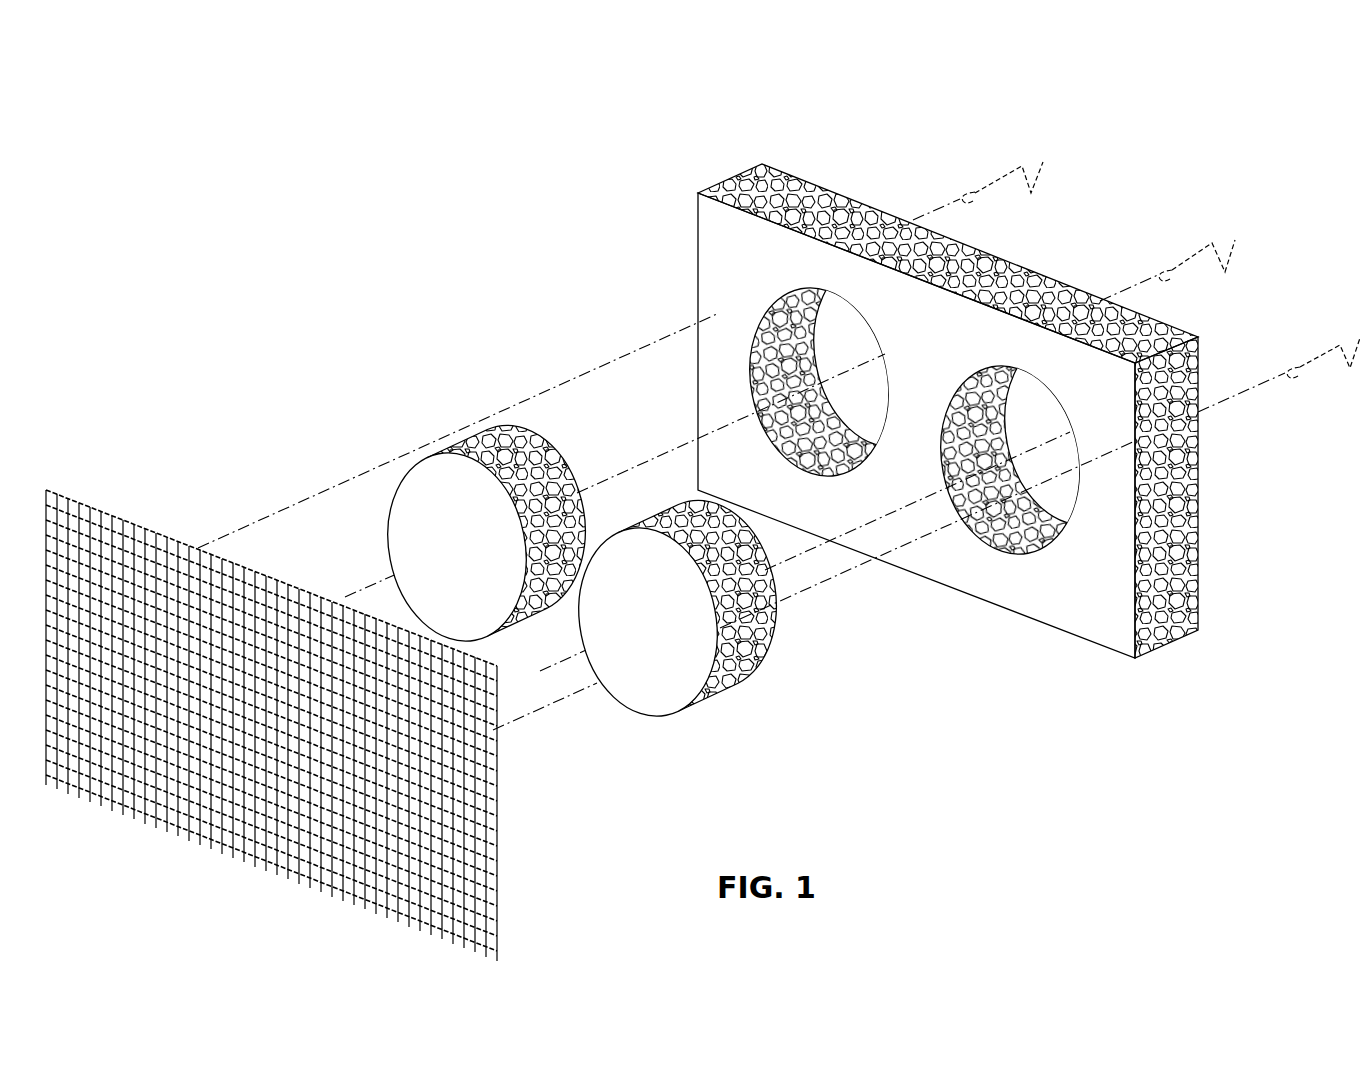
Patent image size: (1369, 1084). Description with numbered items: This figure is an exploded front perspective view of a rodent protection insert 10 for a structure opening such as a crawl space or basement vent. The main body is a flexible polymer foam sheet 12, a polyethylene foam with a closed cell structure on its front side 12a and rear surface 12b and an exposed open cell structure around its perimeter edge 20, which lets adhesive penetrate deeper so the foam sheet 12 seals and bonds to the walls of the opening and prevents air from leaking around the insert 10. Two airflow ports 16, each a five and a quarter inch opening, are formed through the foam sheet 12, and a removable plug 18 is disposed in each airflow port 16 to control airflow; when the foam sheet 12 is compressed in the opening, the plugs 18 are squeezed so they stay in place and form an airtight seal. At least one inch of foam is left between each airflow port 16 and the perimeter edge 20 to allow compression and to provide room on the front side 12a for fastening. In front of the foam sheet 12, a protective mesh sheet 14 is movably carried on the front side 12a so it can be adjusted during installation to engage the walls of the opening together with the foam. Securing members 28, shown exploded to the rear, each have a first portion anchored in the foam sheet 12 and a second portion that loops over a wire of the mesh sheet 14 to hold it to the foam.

The rodent protection insert 10 is at (741, 160).
The flexible polymer foam sheet 12 is at (1028, 455).
The front side 12a is at (1085, 604).
The rear surface 12b is at (1198, 512).
The protective mesh sheet 14 is at (487, 812).
The airflow port 16 is at (786, 341).
The removable plug 18 is at (455, 477).
The perimeter edge 20 is at (1175, 597).
The securing member 28 is at (1031, 190).